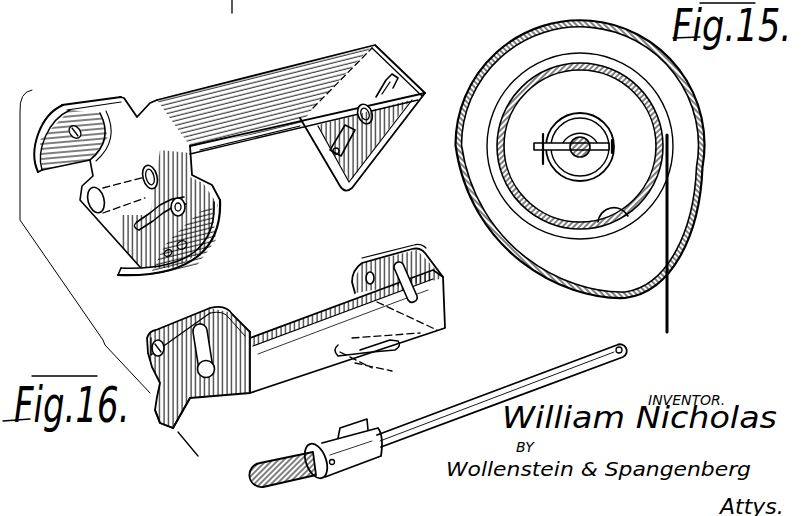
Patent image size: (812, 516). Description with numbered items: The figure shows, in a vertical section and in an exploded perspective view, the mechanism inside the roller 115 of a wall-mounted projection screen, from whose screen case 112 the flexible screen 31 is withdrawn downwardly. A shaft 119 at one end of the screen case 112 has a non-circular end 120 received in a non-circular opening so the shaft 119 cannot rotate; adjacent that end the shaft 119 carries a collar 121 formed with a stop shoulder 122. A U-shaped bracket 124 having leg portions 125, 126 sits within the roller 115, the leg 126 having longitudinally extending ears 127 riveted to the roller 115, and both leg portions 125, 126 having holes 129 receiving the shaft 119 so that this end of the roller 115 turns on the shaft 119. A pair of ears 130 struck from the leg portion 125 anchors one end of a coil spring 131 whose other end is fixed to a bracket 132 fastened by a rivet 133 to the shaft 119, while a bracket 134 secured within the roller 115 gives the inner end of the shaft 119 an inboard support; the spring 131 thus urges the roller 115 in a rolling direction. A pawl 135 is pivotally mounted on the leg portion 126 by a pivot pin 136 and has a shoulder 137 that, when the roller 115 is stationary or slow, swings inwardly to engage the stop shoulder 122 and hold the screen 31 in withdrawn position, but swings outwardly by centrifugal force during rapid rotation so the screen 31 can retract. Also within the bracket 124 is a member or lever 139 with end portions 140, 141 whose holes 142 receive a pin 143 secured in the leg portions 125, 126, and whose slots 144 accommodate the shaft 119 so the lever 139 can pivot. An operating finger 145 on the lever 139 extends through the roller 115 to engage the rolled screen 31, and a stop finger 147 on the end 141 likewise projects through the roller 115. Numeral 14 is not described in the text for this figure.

In FIG. 16, the housing (partial) 14 is at (216, 8).
In FIG. 15, the flexible screen 31 is at (670, 303).
In FIG. 15, the screen case 112 is at (762, 94).
In FIG. 15, the roller 115 is at (613, 210).
In FIG. 16, the shaft 119 is at (524, 362).
In FIG. 15, the shaft 119 is at (590, 157).
In FIG. 16, the non-circular end 120 is at (282, 470).
In FIG. 16, the collar 121 is at (350, 463).
In FIG. 16, the stop shoulder 122 is at (347, 430).
In FIG. 16, the U-shaped bracket 124 is at (262, 59).
In FIG. 16, the leg portion 125 is at (436, 189).
In FIG. 16, the leg portion 126 is at (127, 115).
In FIG. 16, the ears 127 is at (122, 62).
In FIG. 16, the holes 129 is at (172, 152).
In FIG. 16, the ears 130 is at (450, 55).
In FIG. 15, the coil spring 131 is at (603, 115).
In FIG. 15, the bracket 132 is at (612, 140).
In FIG. 15, the rivet 133 is at (577, 130).
In FIG. 16, the bracket 134 is at (507, 19).
In FIG. 16, the pawl 135 is at (110, 237).
In FIG. 16, the pivot pin 136 is at (268, 239).
In FIG. 16, the shoulder 137 is at (110, 222).
In FIG. 16, the member or lever 139 is at (352, 402).
In FIG. 16, the end portion 140 is at (456, 232).
In FIG. 16, the end portion 141 is at (262, 292).
In FIG. 16, the holes 142 is at (172, 309).
In FIG. 16, the pin 143 is at (265, 157).
In FIG. 16, the slots 144 is at (204, 378).
In FIG. 16, the operating finger 145 is at (340, 357).
In FIG. 16, the stop finger 147 is at (168, 426).